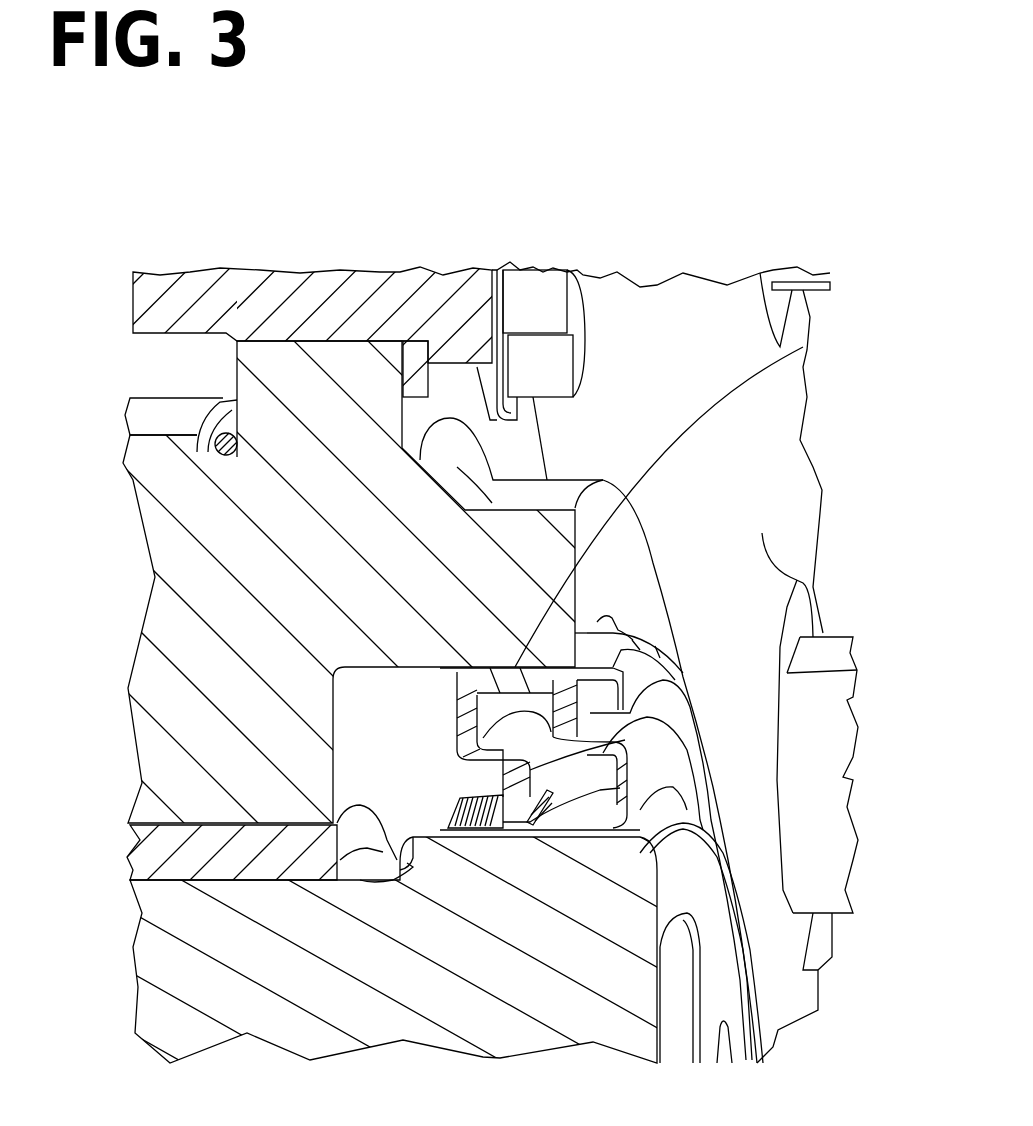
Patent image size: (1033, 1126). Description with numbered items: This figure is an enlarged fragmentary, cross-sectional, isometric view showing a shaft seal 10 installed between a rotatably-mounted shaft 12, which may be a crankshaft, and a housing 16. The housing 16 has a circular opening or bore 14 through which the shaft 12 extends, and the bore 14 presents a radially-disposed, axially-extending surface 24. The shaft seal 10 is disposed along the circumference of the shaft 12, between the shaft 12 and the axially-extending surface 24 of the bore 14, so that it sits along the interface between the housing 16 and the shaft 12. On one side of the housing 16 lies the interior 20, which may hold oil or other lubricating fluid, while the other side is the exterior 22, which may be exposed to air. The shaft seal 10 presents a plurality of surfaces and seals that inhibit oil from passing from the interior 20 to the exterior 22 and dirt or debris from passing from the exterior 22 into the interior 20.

The shaft seal 10 is at (676, 761).
The shaft 12 is at (697, 905).
The bore 14 is at (613, 627).
The housing 16 is at (617, 537).
The interior 20 is at (373, 723).
The exterior 22 is at (733, 673).
The axially-extending surface 24 is at (603, 407).